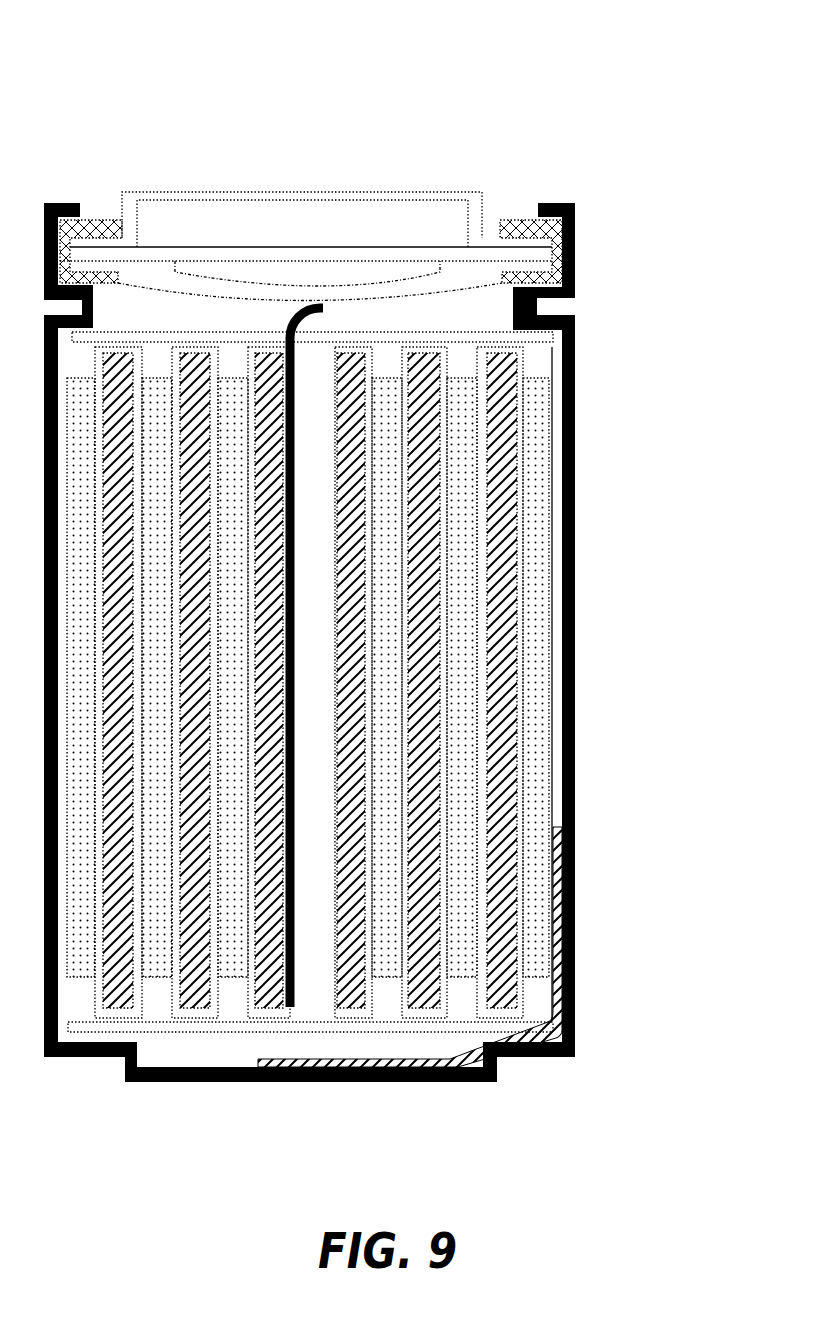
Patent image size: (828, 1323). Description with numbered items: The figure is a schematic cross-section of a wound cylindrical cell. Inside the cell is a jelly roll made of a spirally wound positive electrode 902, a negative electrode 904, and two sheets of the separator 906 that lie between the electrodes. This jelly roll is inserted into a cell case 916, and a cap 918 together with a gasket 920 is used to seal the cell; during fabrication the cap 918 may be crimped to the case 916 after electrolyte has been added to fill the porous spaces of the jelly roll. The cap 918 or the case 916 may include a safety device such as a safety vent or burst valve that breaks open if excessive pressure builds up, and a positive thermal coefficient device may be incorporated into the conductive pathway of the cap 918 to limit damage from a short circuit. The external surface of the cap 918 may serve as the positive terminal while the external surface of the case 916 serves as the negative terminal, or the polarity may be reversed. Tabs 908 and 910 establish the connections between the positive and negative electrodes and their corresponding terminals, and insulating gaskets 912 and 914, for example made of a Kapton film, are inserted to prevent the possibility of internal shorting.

The positive electrode 902 is at (540, 707).
The negative electrode 904 is at (505, 550).
The separator 906 is at (517, 372).
The tab 908 is at (288, 320).
The tab 910 is at (560, 1027).
The insulating gasket 912 is at (465, 330).
The insulating gasket 914 is at (425, 1030).
The cell case 916 is at (198, 1082).
The cap 918 is at (390, 195).
The gasket 920 is at (530, 220).